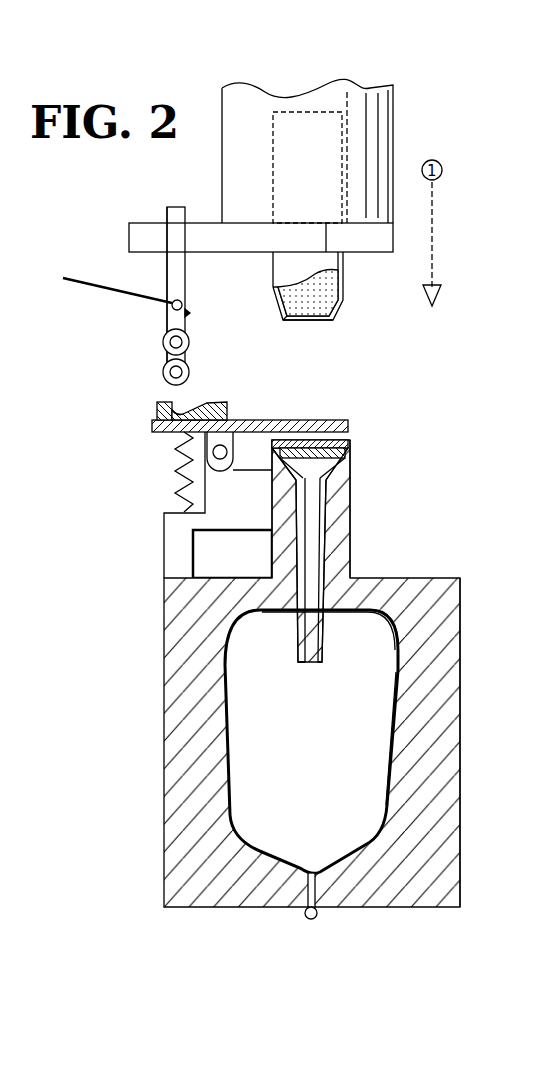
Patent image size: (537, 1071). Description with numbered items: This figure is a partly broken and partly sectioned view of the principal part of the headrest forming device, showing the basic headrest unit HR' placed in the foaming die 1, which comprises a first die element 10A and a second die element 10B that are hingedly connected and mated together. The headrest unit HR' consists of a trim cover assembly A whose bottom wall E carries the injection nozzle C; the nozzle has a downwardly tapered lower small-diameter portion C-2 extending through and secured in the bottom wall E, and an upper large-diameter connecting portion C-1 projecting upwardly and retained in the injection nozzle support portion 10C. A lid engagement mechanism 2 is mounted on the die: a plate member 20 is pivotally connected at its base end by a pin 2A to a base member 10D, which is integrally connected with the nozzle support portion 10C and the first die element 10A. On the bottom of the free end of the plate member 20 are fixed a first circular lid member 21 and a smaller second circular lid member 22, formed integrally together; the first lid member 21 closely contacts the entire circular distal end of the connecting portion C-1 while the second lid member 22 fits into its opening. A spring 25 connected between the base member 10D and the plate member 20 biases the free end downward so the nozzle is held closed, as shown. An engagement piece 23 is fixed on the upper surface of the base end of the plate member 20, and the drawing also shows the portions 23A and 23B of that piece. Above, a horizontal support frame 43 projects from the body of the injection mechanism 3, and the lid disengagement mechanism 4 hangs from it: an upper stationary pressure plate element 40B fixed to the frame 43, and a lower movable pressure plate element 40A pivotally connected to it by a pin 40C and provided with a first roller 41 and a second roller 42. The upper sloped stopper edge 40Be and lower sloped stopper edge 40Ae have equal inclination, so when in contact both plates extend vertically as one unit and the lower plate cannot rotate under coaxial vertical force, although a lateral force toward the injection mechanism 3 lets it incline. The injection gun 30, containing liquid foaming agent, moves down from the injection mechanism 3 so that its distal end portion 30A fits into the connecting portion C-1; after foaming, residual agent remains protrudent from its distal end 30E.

The foaming die 1 is at (301, 667).
The lid engagement mechanism 2 is at (252, 468).
The pin 2A is at (220, 460).
The injection mechanism 3 is at (397, 112).
The lid disengagement mechanism 4 is at (139, 276).
The first die element 10A is at (178, 757).
The second die element 10B is at (448, 780).
The injection nozzle support portion 10C is at (342, 530).
The base member 10D is at (163, 540).
The plate member 20 is at (337, 413).
The first circular lid member 21 is at (348, 438).
The second circular lid member 22 is at (328, 458).
The engagement piece 23 is at (157, 412).
The notch 23A is at (177, 405).
The inclined cam surface 23B is at (205, 403).
The spring 25 is at (177, 473).
The injection gun 30 is at (344, 307).
The distal end portion 30A is at (343, 315).
The distal end 30E is at (308, 323).
The lower movable pressure plate element 40A is at (172, 315).
The lower sloped stopper edge 40Ae is at (172, 288).
The upper stationary pressure plate element 40B is at (167, 207).
The upper sloped stopper edge 40Be is at (186, 313).
The pin 40C is at (97, 287).
The first roller 41 is at (189, 372).
The second roller 42 is at (163, 338).
The horizontal support frame 43 is at (203, 228).
The trim cover assembly A is at (222, 703).
The injection nozzle C is at (330, 557).
The upper large-diameter connecting portion C-1 is at (328, 485).
The lower small-diameter portion C-2 is at (322, 648).
The bottom wall E is at (385, 621).
The basic headrest unit HR' is at (449, 738).